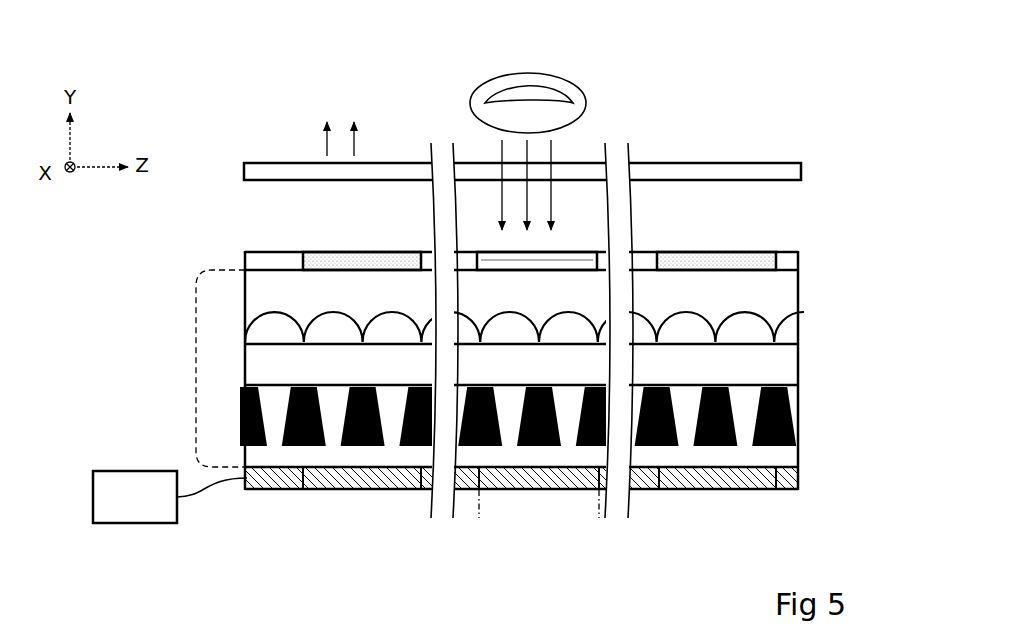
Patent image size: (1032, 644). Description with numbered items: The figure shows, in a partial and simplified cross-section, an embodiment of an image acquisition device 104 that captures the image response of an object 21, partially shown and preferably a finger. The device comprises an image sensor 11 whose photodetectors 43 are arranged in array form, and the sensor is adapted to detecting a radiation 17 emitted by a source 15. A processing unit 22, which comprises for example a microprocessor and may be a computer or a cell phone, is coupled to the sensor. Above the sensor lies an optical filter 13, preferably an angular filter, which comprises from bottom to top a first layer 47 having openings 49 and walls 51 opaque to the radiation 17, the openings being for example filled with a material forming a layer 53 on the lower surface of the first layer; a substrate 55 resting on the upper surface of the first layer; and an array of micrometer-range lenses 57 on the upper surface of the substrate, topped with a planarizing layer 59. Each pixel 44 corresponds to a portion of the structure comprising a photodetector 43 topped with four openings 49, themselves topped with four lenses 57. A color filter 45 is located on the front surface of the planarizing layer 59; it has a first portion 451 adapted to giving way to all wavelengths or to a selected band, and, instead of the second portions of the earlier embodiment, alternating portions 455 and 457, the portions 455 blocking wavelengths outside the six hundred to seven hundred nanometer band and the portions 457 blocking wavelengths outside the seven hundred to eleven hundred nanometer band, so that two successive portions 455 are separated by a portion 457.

The image acquisition device 104 is at (850, 85).
The image sensor 11 is at (805, 492).
The optical filter 13 is at (195, 364).
The source 15 is at (806, 171).
The radiation 17 is at (318, 143).
The object 21 is at (559, 72).
The processing unit 22 is at (135, 528).
The photodetector 43 is at (705, 492).
The pixel 44 is at (532, 492).
The color filter 45 is at (805, 258).
The first layer 47 is at (806, 404).
The openings 49 is at (749, 408).
The walls 51 is at (716, 457).
The layer 53 is at (780, 452).
The substrate 55 is at (806, 371).
The micrometer-range lenses 57 is at (783, 313).
The planarizing layer 59 is at (768, 283).
The first portion 451 is at (242, 250).
The portion 455 is at (567, 250).
The portion 457 is at (350, 248).